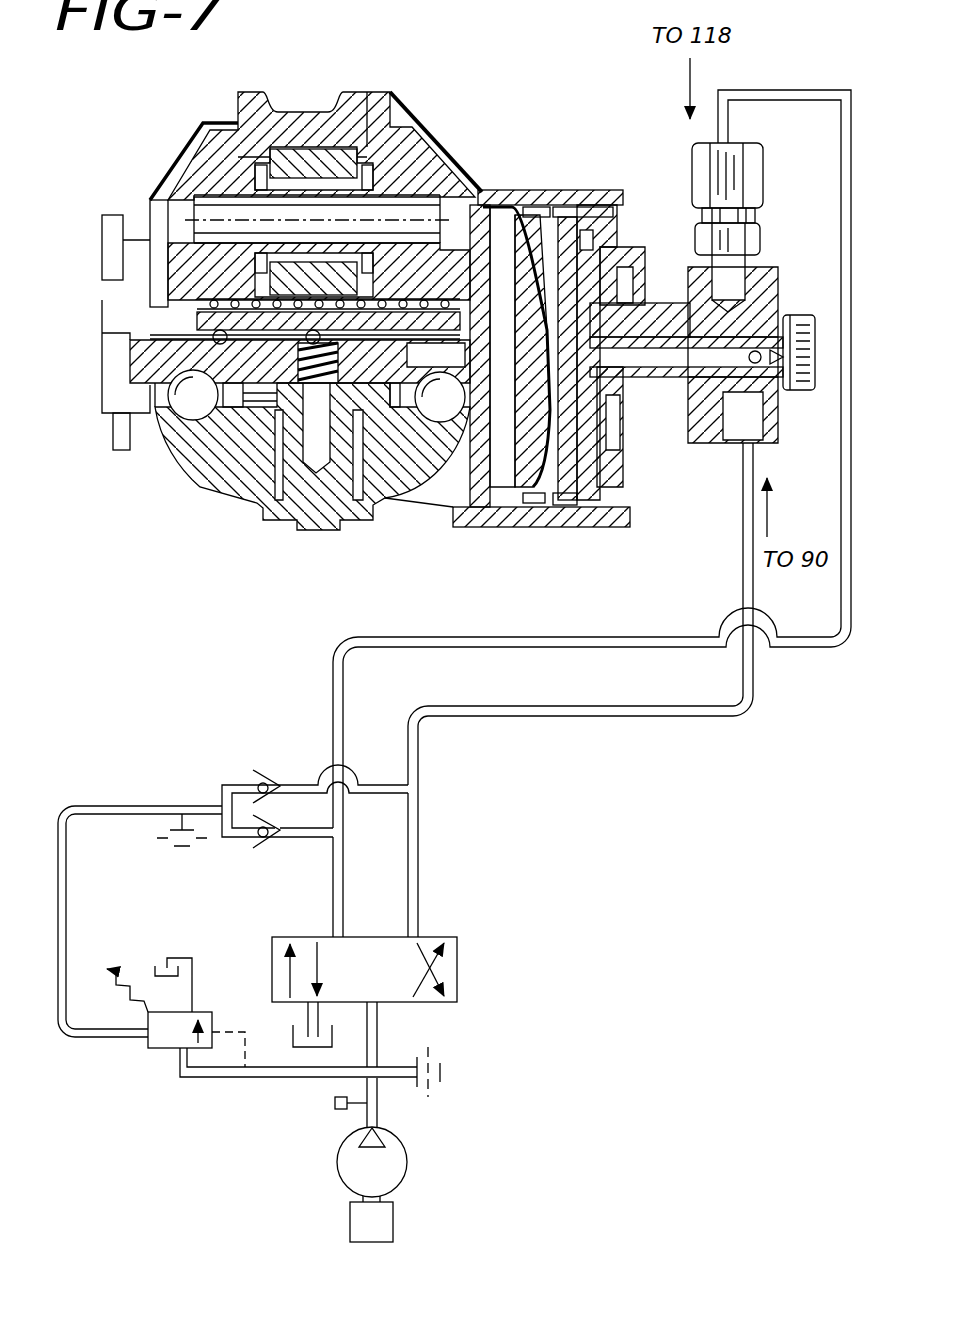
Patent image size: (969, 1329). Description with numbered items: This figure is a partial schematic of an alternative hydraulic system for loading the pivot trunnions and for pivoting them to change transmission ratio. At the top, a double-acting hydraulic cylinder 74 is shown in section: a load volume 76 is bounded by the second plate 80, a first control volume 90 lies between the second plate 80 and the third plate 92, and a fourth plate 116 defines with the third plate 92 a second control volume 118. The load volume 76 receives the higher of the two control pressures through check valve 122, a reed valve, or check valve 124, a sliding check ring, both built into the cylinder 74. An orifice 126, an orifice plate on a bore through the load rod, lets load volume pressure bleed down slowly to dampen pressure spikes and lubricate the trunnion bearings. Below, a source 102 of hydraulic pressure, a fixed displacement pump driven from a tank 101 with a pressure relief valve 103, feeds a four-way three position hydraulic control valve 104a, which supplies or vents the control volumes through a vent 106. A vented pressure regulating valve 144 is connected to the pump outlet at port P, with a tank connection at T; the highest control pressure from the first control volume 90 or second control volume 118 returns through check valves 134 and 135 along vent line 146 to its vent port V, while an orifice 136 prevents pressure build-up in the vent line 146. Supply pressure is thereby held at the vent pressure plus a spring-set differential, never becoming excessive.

The hydraulic cylinder 74 is at (480, 189).
The load volume 76 is at (527, 503).
The second plate 80 is at (543, 213).
The first control volume 90 is at (563, 493).
The third plate 92 is at (597, 237).
The fourth plate 116 is at (623, 238).
The second control volume 118 is at (612, 463).
The check valve 122 is at (455, 508).
The check valve 124 is at (582, 203).
The orifice 126 is at (516, 340).
The check valve 134 is at (258, 772).
The check valve 135 is at (260, 847).
The orifice 136 is at (184, 847).
The vent line 146 is at (67, 910).
The vented pressure regulating valve 144 is at (155, 1050).
The four-way three position hydraulic control valve 104a is at (462, 951).
The vent 106 is at (320, 1010).
The pressure relief valve 103 is at (334, 1102).
The source of hydraulic pressure 102 is at (406, 1146).
The tank 101 is at (350, 1222).